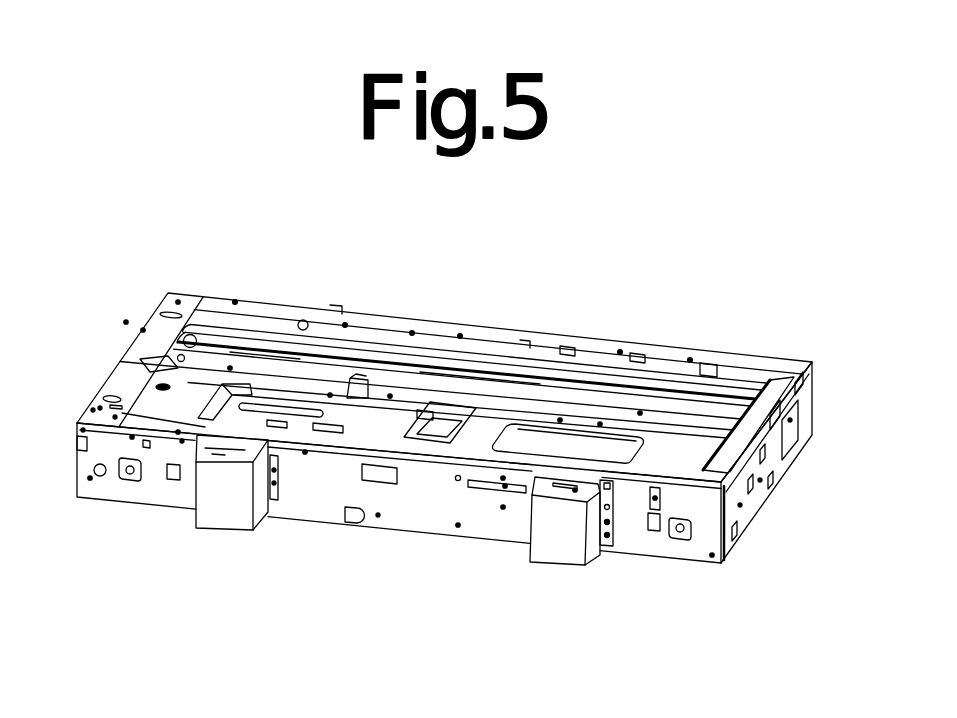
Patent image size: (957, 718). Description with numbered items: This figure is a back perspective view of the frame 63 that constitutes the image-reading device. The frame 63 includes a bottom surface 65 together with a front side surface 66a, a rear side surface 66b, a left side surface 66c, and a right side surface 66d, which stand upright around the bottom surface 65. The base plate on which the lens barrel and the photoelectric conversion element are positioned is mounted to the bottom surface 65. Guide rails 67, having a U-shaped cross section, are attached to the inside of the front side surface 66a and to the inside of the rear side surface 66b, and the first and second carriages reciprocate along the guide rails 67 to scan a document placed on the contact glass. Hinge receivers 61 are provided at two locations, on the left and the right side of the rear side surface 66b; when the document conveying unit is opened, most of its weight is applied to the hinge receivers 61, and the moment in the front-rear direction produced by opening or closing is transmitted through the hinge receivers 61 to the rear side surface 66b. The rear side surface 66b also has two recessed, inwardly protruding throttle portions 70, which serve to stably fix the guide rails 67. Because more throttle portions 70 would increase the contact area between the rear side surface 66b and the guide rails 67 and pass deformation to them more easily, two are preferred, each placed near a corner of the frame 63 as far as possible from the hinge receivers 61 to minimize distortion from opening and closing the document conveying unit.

The frame 63 is at (662, 323).
The hinge receivers 61 is at (553, 552).
The bottom surface 65 is at (487, 417).
The front side surface 66a is at (421, 320).
The rear side surface 66b is at (168, 497).
The left side surface 66c is at (772, 460).
The right side surface 66d is at (108, 362).
The guide rails 67 is at (272, 333).
The throttle portions 70 is at (118, 484).